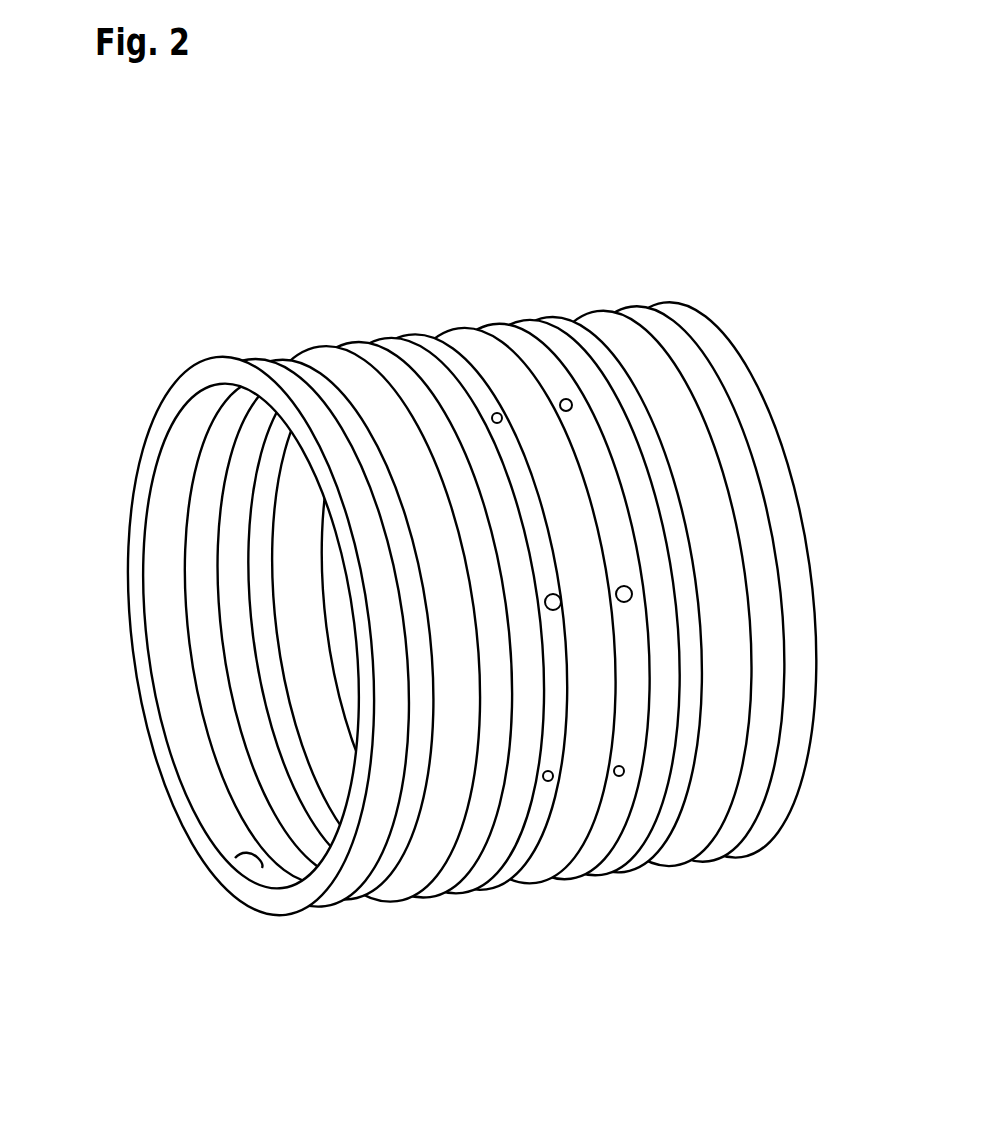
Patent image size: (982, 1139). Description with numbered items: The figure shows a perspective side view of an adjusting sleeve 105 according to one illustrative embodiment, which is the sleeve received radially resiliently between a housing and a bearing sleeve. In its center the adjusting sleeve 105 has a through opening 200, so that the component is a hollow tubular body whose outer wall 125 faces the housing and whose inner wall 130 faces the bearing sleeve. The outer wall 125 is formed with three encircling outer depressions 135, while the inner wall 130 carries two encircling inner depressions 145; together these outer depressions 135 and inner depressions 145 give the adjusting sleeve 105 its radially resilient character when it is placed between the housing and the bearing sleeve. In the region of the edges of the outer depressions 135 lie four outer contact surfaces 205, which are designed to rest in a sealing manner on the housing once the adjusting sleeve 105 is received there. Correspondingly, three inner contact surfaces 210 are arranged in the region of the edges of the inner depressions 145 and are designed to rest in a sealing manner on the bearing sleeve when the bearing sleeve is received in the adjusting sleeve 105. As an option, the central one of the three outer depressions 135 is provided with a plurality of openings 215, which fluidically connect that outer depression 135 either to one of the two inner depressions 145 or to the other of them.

The adjusting sleeve 105 is at (243, 212).
The outer wall 125 is at (258, 353).
The inner wall 130 is at (235, 858).
The outer depressions 135 is at (340, 352).
The inner depressions 145 is at (292, 605).
The through opening 200 is at (212, 799).
The outer contact surfaces 205 is at (282, 357).
The inner contact surfaces 210 is at (240, 699).
The openings 215 is at (546, 788).